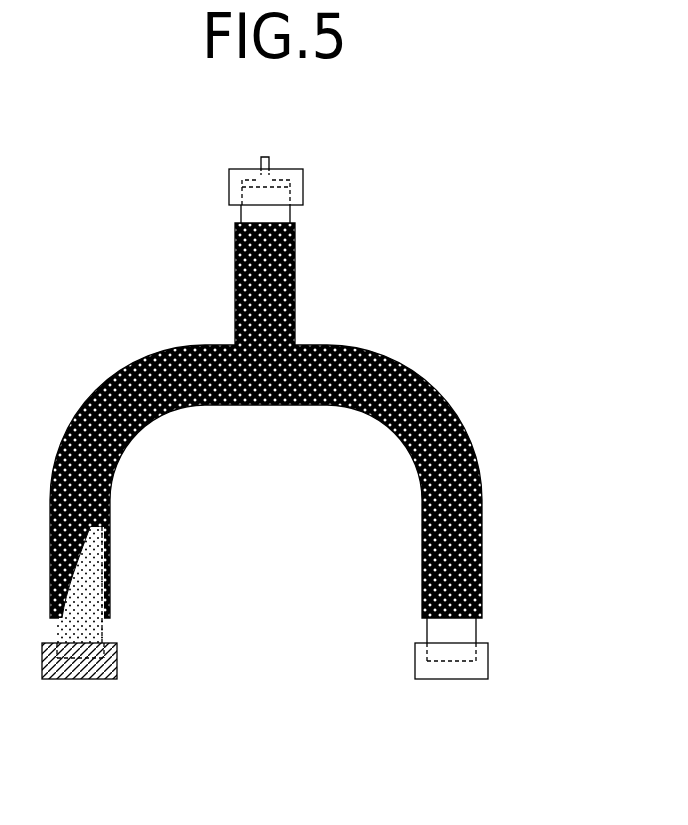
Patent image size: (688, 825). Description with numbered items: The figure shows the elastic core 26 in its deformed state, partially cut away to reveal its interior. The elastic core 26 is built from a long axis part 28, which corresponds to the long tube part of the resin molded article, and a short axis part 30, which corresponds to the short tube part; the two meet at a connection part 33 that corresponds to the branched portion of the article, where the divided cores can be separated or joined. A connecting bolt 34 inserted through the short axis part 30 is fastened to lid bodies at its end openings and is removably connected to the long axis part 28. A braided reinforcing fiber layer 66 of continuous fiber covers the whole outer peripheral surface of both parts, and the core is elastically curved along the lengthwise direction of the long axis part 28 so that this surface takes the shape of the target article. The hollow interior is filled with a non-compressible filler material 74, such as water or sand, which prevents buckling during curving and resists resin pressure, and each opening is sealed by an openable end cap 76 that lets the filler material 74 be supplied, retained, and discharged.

The elastic core 26 is at (323, 193).
The long axis part 28 is at (450, 632).
The short axis part 30 is at (253, 215).
The connection part 33 is at (311, 327).
The connecting bolt 34 is at (265, 157).
The reinforcing fiber layer 66 is at (430, 417).
The filler material 74 is at (87, 589).
The end cap 76 is at (294, 181).